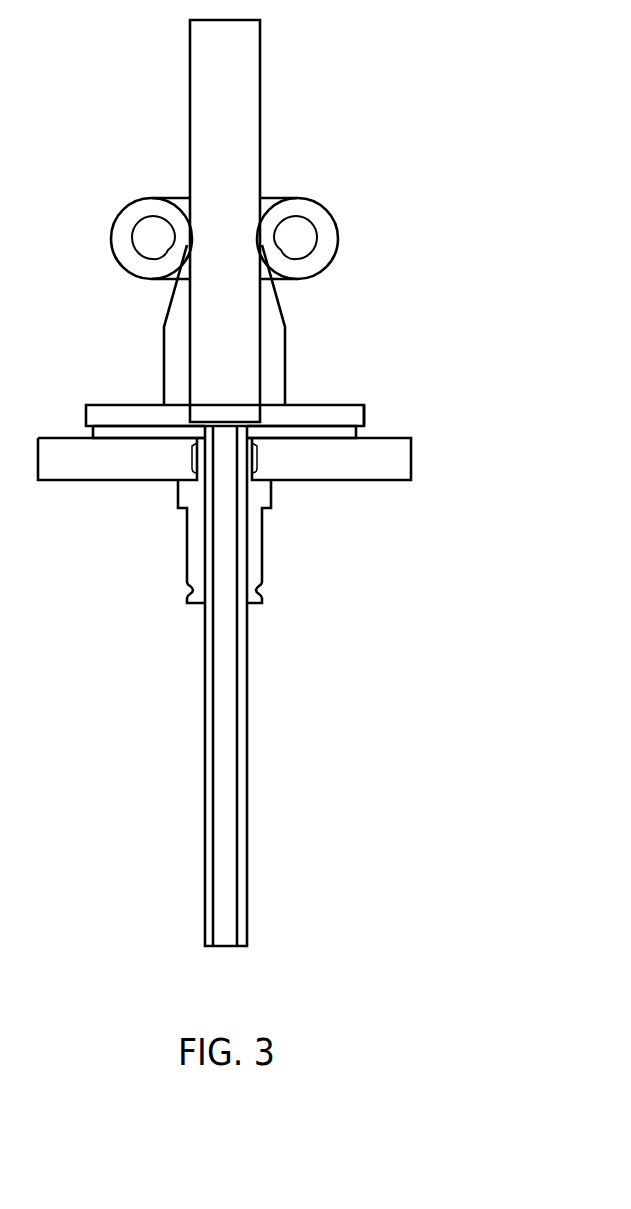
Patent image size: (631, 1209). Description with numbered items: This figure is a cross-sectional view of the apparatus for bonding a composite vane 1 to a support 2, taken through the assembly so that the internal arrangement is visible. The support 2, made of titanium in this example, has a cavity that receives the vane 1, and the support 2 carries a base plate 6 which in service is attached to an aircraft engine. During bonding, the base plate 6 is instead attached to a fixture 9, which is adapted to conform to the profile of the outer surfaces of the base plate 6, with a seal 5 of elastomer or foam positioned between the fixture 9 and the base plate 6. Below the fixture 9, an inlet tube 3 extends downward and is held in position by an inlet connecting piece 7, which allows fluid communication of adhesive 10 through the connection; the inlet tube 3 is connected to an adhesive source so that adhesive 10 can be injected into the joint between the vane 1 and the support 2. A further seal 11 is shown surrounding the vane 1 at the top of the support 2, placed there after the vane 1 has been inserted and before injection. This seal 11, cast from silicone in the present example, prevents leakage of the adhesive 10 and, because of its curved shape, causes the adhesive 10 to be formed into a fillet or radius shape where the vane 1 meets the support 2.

The composite vane 1 is at (260, 120).
The support 2 is at (276, 382).
The inlet tube 3 is at (232, 722).
The seal 5 is at (350, 435).
The base plate 6 is at (352, 418).
The inlet connecting piece 7 is at (255, 555).
The fixture 9 is at (400, 463).
The adhesive 10 is at (261, 337).
The seal 11 is at (330, 212).